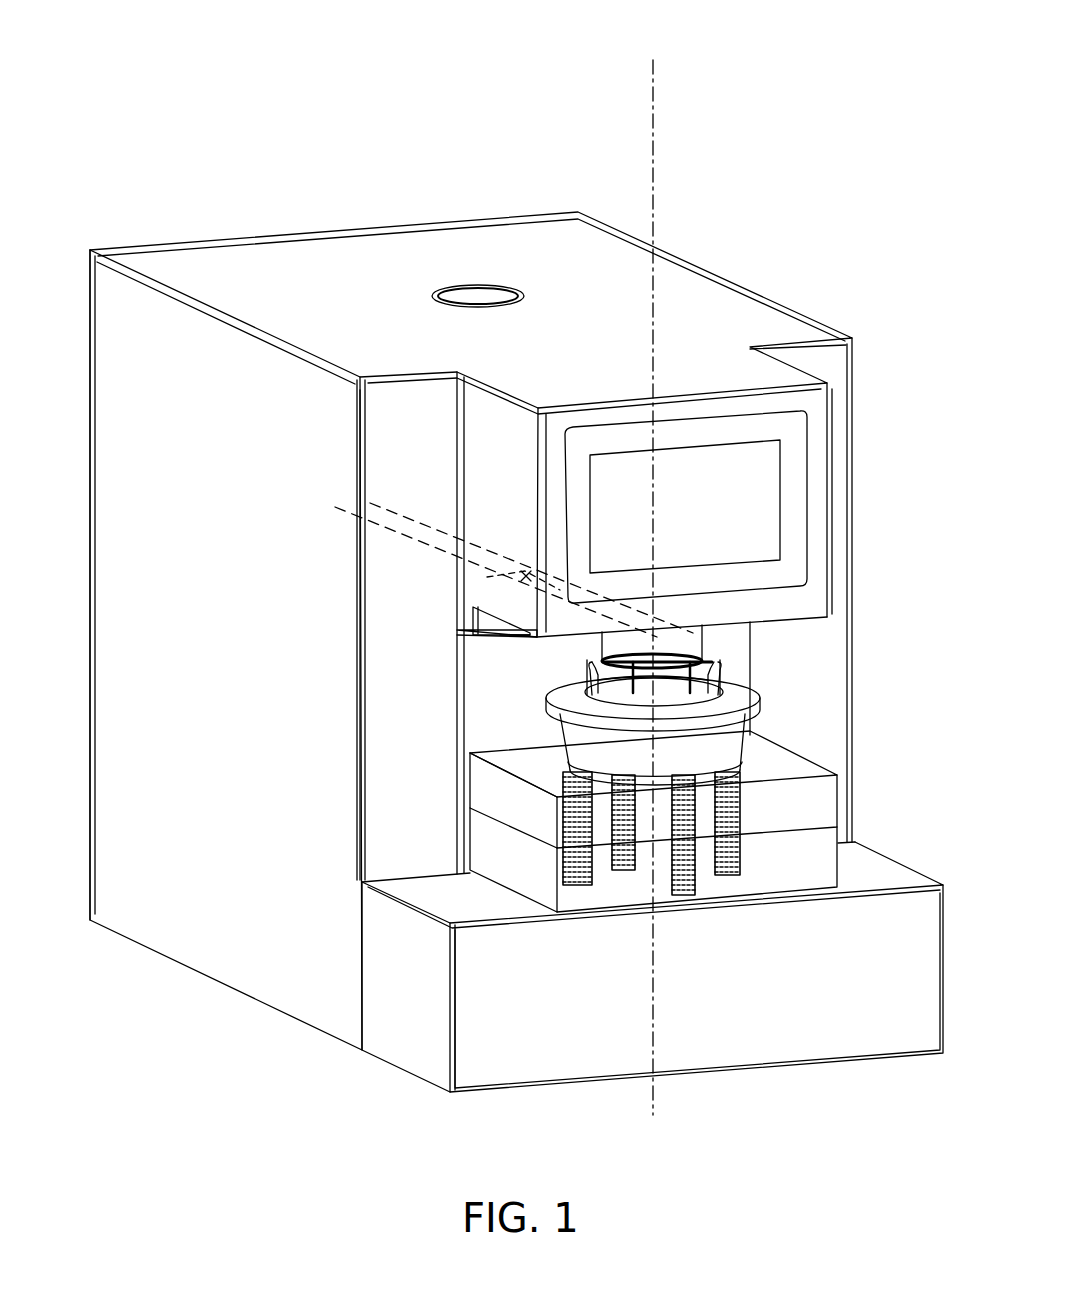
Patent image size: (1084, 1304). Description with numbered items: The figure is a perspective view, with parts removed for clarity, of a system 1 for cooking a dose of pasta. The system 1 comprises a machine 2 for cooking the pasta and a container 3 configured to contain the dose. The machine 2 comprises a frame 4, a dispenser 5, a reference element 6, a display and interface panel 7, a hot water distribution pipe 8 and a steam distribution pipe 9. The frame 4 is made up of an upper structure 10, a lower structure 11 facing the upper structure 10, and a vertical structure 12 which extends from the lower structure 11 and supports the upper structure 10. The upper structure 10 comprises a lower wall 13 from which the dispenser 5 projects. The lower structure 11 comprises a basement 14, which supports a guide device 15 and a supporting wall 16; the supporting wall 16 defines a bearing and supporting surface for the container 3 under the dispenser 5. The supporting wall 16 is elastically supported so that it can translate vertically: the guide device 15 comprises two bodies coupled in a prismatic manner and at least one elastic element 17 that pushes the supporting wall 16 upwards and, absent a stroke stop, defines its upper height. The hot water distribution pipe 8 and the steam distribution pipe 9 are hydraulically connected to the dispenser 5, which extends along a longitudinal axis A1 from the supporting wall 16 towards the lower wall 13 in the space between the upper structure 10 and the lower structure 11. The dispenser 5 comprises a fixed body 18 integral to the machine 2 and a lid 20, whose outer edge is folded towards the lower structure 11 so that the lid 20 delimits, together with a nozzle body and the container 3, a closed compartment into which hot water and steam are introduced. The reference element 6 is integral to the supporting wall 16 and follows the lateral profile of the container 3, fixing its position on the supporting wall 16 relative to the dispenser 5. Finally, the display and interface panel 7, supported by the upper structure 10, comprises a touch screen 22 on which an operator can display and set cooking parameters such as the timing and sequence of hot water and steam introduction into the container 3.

The system for cooking a dose of pasta 1 is at (160, 105).
The longitudinal axis A1 is at (656, 101).
The machine 2 is at (915, 345).
The container 3 is at (725, 747).
The frame 4 is at (187, 660).
The dispenser 5 is at (725, 665).
The reference element 6 is at (515, 755).
The display and interface panel 7 is at (830, 500).
The hot water distribution pipe 8 is at (430, 550).
The steam distribution pipe 9 is at (427, 523).
The upper structure 10 is at (492, 648).
The lower structure 11 is at (405, 950).
The vertical structure 12 is at (382, 773).
The lower wall 13 is at (505, 640).
The basement 14 is at (840, 1028).
The guide device 15 is at (500, 795).
The supporting wall 16 is at (795, 767).
The elastic element 17 is at (730, 880).
The fixed body 18 is at (713, 636).
The lid 20 is at (737, 692).
The touch screen 22 is at (748, 488).